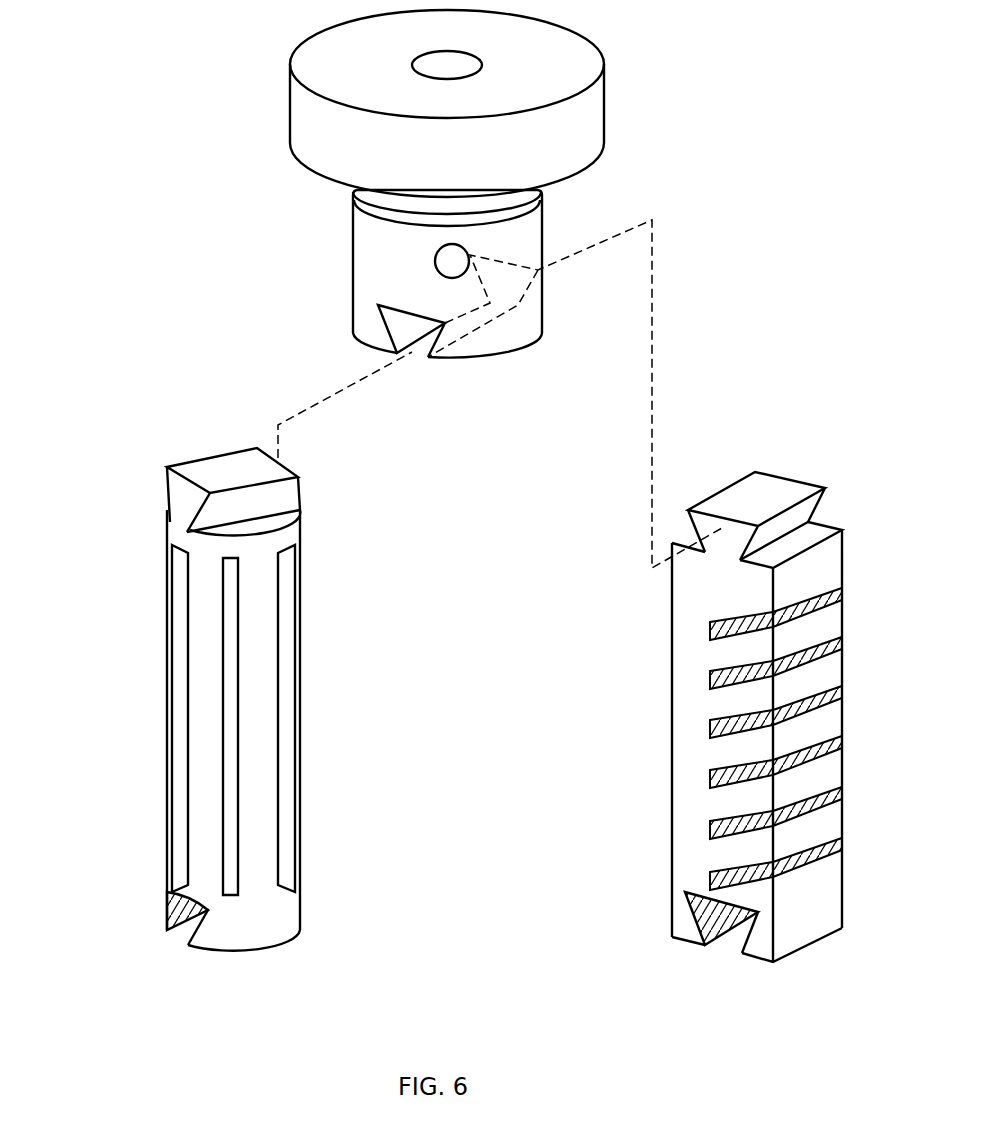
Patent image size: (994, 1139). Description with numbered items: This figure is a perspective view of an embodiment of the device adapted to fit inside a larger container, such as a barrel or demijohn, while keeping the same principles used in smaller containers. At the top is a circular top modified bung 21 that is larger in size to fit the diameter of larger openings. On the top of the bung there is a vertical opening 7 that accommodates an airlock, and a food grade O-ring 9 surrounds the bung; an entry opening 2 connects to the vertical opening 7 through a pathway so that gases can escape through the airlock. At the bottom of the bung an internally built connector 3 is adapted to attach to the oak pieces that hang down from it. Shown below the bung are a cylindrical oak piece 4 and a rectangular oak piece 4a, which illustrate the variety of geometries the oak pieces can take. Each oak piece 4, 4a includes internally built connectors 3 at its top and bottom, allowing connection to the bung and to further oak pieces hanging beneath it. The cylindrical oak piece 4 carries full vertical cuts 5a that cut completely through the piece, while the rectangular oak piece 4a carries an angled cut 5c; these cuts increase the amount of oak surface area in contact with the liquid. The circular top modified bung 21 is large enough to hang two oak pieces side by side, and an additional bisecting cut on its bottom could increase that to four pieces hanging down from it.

The circular top modified bung 21 is at (605, 105).
The vertical opening 7 is at (482, 65).
The food grade O-ring 9 is at (545, 193).
The entry opening 2 is at (435, 262).
The internally built connector 3 is at (205, 455).
The oak piece 4 is at (300, 722).
The full vertical cut 5a is at (167, 682).
The rectangular oak piece 4a is at (672, 718).
The angled cut 5c is at (830, 685).